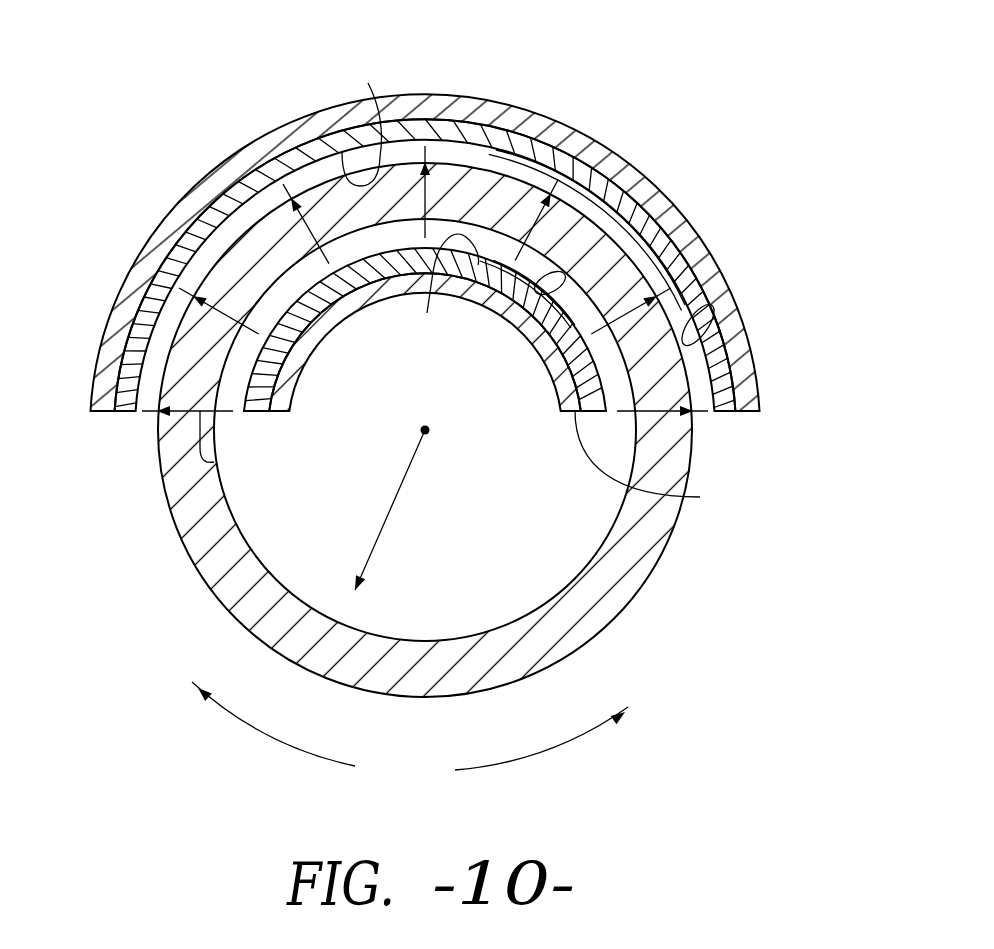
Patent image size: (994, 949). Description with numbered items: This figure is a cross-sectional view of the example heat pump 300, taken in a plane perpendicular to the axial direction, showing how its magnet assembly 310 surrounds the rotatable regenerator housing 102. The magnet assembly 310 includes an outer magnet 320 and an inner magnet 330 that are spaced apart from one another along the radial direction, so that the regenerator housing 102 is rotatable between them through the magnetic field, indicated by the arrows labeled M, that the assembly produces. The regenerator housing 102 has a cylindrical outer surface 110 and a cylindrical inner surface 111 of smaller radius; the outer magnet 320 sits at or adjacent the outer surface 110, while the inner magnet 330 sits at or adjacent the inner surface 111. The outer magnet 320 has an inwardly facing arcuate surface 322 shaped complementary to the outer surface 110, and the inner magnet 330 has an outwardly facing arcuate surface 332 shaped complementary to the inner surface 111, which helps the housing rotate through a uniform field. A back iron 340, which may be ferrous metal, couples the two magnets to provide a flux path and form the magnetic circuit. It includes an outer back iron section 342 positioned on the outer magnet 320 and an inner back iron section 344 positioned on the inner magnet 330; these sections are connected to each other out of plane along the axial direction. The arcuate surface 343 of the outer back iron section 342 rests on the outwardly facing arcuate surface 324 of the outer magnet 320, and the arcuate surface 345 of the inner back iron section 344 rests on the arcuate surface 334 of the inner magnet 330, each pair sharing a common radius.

The heat pump 300 is at (716, 59).
The magnet assembly 310 is at (200, 183).
The outer magnet 320 is at (135, 345).
The arcuate surface 322 is at (357, 115).
The arcuate surface 324 is at (160, 257).
The inner magnet 330 is at (302, 312).
The arcuate surface 332 is at (543, 327).
The arcuate surface 334 is at (562, 380).
The back iron 340 is at (758, 378).
The outer back iron section 342 is at (675, 232).
The arcuate surface 343 is at (707, 338).
The inner back iron section 344 is at (288, 378).
The arcuate surface 345 is at (486, 292).
The regenerator housing 102 is at (633, 545).
The outer surface 110 is at (628, 617).
The inner surface 111 is at (583, 568).